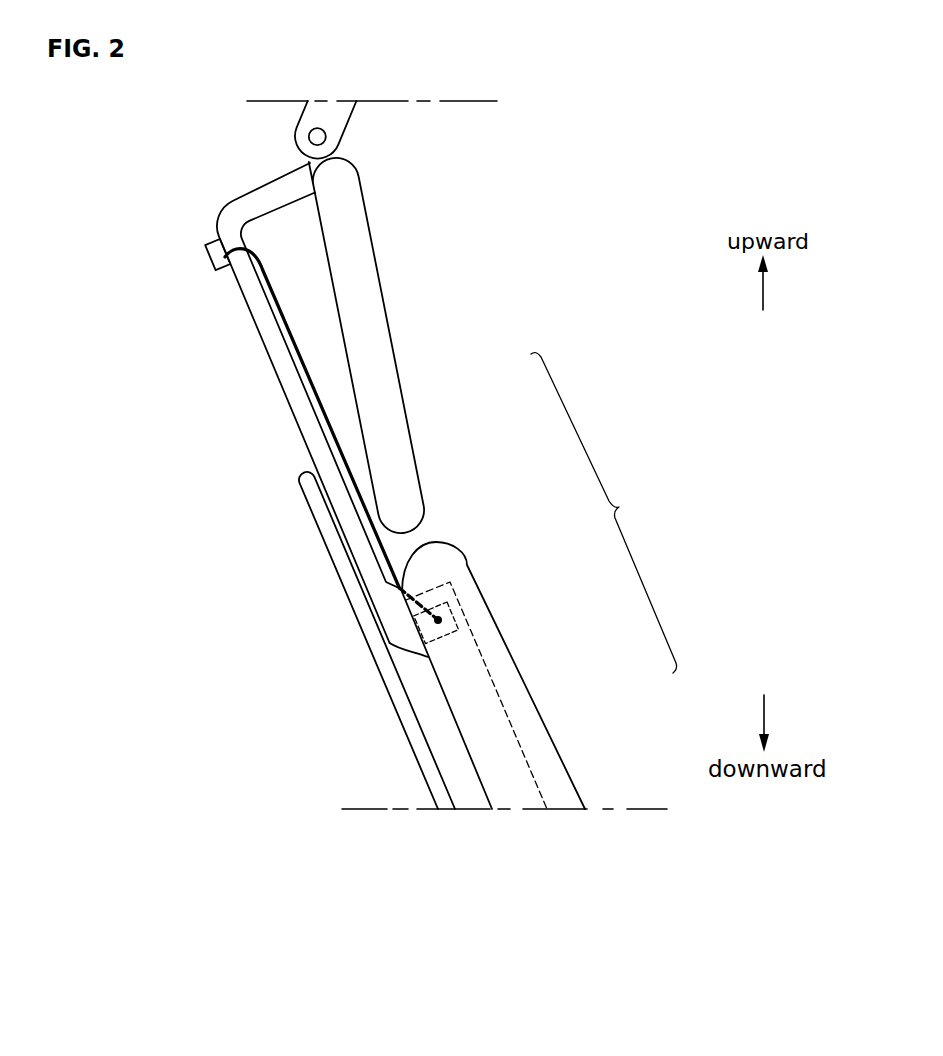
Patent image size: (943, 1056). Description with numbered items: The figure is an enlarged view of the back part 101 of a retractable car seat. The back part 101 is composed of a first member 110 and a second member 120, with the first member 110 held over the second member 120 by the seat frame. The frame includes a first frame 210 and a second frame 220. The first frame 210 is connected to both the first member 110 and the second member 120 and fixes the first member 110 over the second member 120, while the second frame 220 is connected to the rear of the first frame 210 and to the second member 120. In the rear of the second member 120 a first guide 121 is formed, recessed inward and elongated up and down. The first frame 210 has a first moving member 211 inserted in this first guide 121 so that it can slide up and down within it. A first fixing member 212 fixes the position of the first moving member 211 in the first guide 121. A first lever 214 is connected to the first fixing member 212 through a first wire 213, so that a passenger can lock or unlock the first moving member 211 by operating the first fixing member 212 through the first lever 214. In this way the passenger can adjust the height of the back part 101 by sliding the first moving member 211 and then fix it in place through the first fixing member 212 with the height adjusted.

The back part 101 is at (604, 513).
The first member 110 is at (382, 360).
The second member 120 is at (527, 693).
The first guide 121 is at (515, 787).
The first frame 210 is at (274, 352).
The first moving member 211 is at (392, 642).
The first fixing member 212 is at (428, 635).
The first wire 213 is at (318, 406).
The first lever 214 is at (212, 258).
The second frame 220 is at (420, 737).